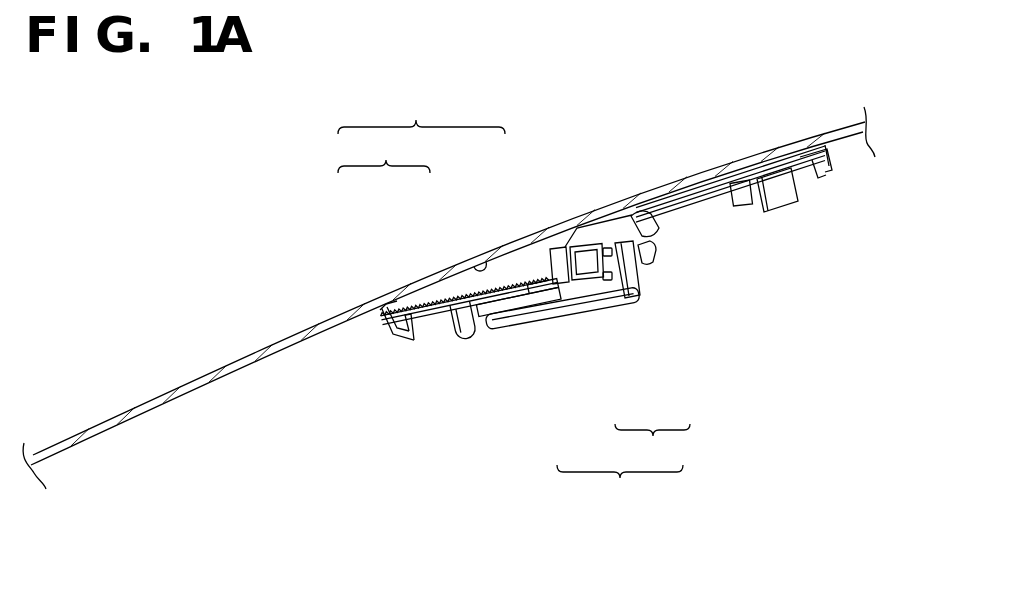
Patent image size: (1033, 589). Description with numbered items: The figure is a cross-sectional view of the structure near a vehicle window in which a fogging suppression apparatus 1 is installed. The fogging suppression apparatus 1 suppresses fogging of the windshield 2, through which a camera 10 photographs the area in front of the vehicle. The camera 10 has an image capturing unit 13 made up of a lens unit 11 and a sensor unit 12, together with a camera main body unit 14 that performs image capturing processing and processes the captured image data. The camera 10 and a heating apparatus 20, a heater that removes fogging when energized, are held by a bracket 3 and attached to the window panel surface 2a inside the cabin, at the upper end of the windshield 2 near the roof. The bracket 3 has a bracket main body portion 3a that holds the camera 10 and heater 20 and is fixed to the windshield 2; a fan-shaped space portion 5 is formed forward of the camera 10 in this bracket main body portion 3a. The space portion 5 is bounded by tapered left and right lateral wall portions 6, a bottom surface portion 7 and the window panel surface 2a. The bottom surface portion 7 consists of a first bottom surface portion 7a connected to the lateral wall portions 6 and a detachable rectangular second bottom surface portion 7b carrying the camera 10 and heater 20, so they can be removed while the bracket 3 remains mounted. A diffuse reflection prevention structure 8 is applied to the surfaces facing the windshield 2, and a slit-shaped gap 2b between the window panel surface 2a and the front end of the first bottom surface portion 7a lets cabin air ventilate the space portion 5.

The fogging suppression apparatus 1 is at (410, 387).
The windshield 2 is at (224, 368).
The window panel surface 2a is at (125, 422).
The gap 2b is at (394, 304).
The bracket 3 is at (786, 183).
The bracket main body portion 3a is at (638, 216).
The space portion 5 is at (448, 214).
The lateral wall portions 6 is at (517, 278).
The bottom surface portion 7 is at (384, 236).
The first bottom surface portion 7a is at (392, 310).
The second bottom surface portion 7b is at (421, 324).
The structure for preventing a decrease in surroundings-detecting accuracy 8 is at (515, 327).
The camera 10 is at (587, 378).
The lens unit 11 is at (574, 302).
The sensor unit 12 is at (592, 283).
The image capturing unit 13 is at (620, 357).
The camera main body unit 14 is at (537, 302).
The heating apparatus 20 is at (457, 346).